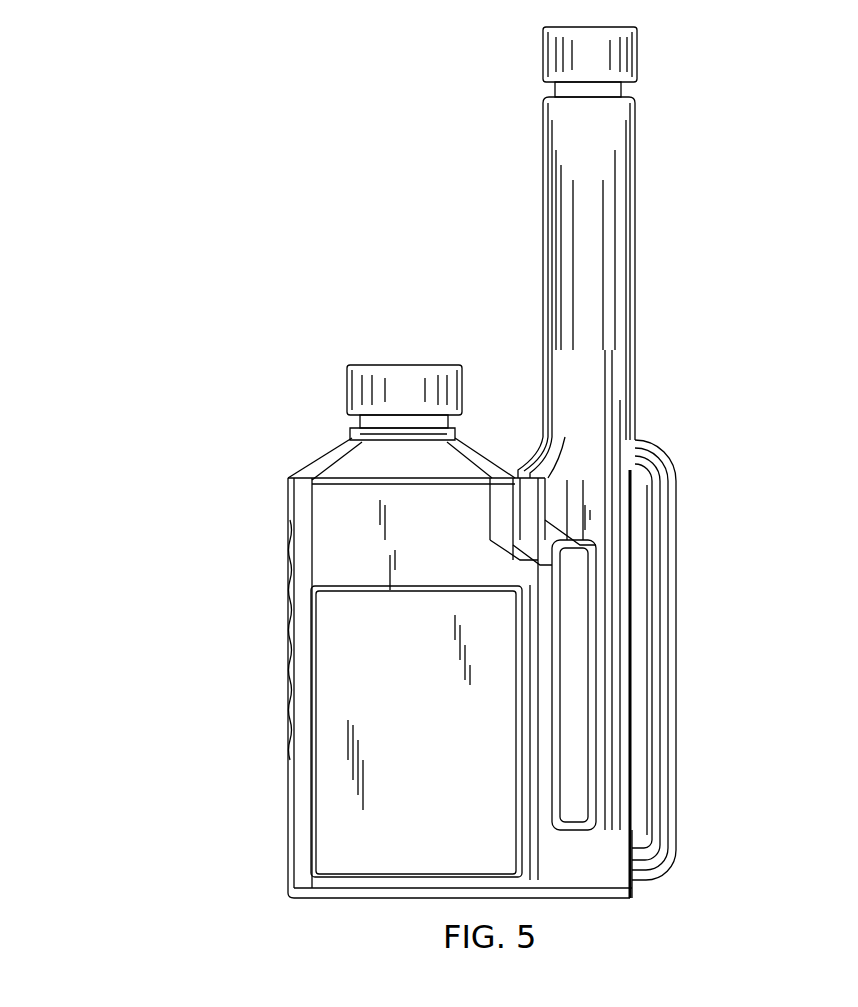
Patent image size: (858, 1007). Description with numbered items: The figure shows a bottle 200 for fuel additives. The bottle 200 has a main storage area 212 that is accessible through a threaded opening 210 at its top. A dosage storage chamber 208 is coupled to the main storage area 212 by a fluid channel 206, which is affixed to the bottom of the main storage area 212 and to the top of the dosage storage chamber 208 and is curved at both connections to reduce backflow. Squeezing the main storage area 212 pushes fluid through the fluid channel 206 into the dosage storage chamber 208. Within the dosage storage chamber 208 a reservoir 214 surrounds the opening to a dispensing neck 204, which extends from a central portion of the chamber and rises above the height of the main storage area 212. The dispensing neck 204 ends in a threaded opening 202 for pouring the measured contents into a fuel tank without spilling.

The bottle 200 is at (108, 90).
The opening of dispensing neck 202 is at (642, 62).
The dispensing neck 204 is at (638, 245).
The fluid channel 206 is at (686, 572).
The dosage storage chamber 208 is at (526, 437).
The opening of main storage area 210 is at (392, 343).
The main storage area 212 is at (342, 729).
The reservoir 214 is at (578, 505).